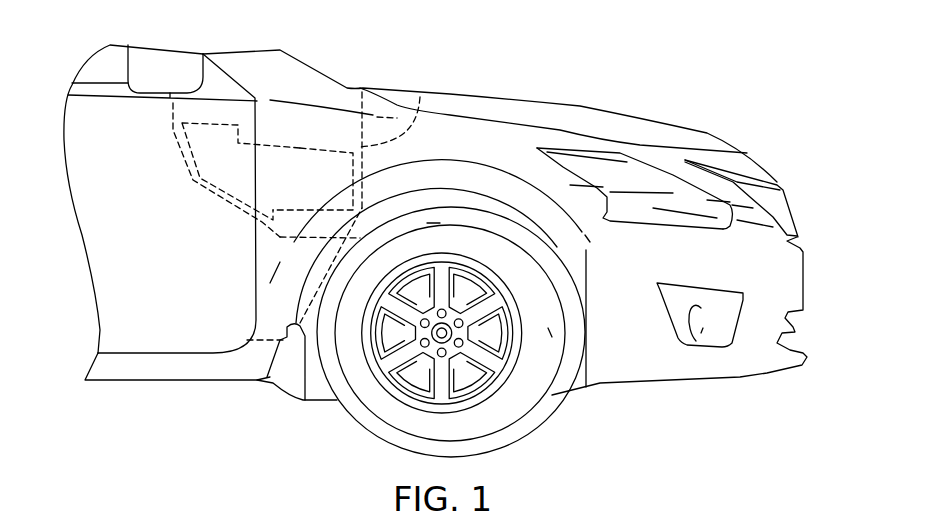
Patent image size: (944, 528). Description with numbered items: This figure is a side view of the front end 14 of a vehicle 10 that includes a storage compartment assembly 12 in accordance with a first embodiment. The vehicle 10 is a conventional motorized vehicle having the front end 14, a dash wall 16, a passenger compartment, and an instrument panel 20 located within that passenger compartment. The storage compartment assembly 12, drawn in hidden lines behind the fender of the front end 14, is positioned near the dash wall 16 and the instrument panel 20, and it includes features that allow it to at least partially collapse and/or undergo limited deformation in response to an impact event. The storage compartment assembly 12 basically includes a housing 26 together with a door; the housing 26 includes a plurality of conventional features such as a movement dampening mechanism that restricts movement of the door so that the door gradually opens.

The vehicle 10 is at (624, 58).
The storage compartment assembly 12 is at (220, 114).
The front end 14 is at (825, 260).
The dash wall 16 is at (420, 97).
The instrument panel 20 is at (177, 152).
The housing 26 is at (279, 146).